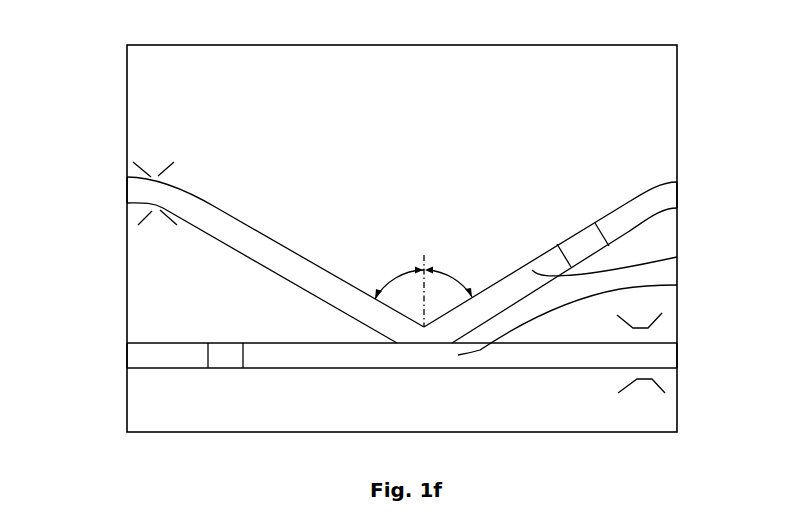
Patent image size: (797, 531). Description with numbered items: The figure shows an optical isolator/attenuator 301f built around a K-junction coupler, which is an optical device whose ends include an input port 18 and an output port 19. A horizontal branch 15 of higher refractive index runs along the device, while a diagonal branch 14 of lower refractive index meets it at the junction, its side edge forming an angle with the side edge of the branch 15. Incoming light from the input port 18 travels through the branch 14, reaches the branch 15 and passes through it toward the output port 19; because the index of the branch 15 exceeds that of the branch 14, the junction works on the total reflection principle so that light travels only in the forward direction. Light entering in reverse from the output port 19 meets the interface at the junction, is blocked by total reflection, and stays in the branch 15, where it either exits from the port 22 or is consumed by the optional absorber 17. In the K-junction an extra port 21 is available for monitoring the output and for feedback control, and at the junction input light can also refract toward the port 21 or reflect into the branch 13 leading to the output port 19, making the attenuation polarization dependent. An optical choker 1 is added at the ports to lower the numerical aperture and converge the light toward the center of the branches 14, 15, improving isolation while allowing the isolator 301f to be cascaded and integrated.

The optical isolator 301f is at (402, 218).
The optical choker 1 is at (150, 193).
The branch 13 is at (677, 257).
The branch 14 is at (293, 267).
The branch 15 is at (677, 285).
The absorber 17 is at (225, 353).
The input port 18 is at (73, 190).
The output port 19 is at (725, 357).
The port 21 is at (725, 195).
The port 22 is at (73, 356).